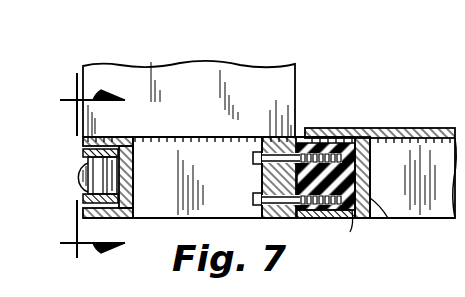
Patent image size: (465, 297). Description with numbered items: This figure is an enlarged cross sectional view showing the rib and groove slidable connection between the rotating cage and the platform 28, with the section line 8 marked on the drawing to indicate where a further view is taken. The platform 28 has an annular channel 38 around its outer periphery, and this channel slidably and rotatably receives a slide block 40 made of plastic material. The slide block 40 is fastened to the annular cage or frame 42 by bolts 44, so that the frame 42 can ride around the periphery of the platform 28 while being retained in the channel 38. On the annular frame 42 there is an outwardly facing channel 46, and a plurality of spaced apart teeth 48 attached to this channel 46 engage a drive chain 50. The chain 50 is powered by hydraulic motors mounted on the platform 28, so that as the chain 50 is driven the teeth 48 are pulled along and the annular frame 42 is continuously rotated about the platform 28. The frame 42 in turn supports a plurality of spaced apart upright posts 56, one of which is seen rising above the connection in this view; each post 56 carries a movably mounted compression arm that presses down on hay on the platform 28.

The section line 8- 8 is at (78, 164).
The platform 28 is at (428, 128).
The annular channel 38 is at (388, 218).
The slide block 40 is at (316, 196).
The annular cage or frame 42 is at (197, 177).
The bolts 44 is at (258, 195).
The outwardly facing channel 46 is at (113, 220).
The teeth 48 is at (82, 174).
The drive chain 50 is at (82, 198).
The upright post 56 is at (282, 77).